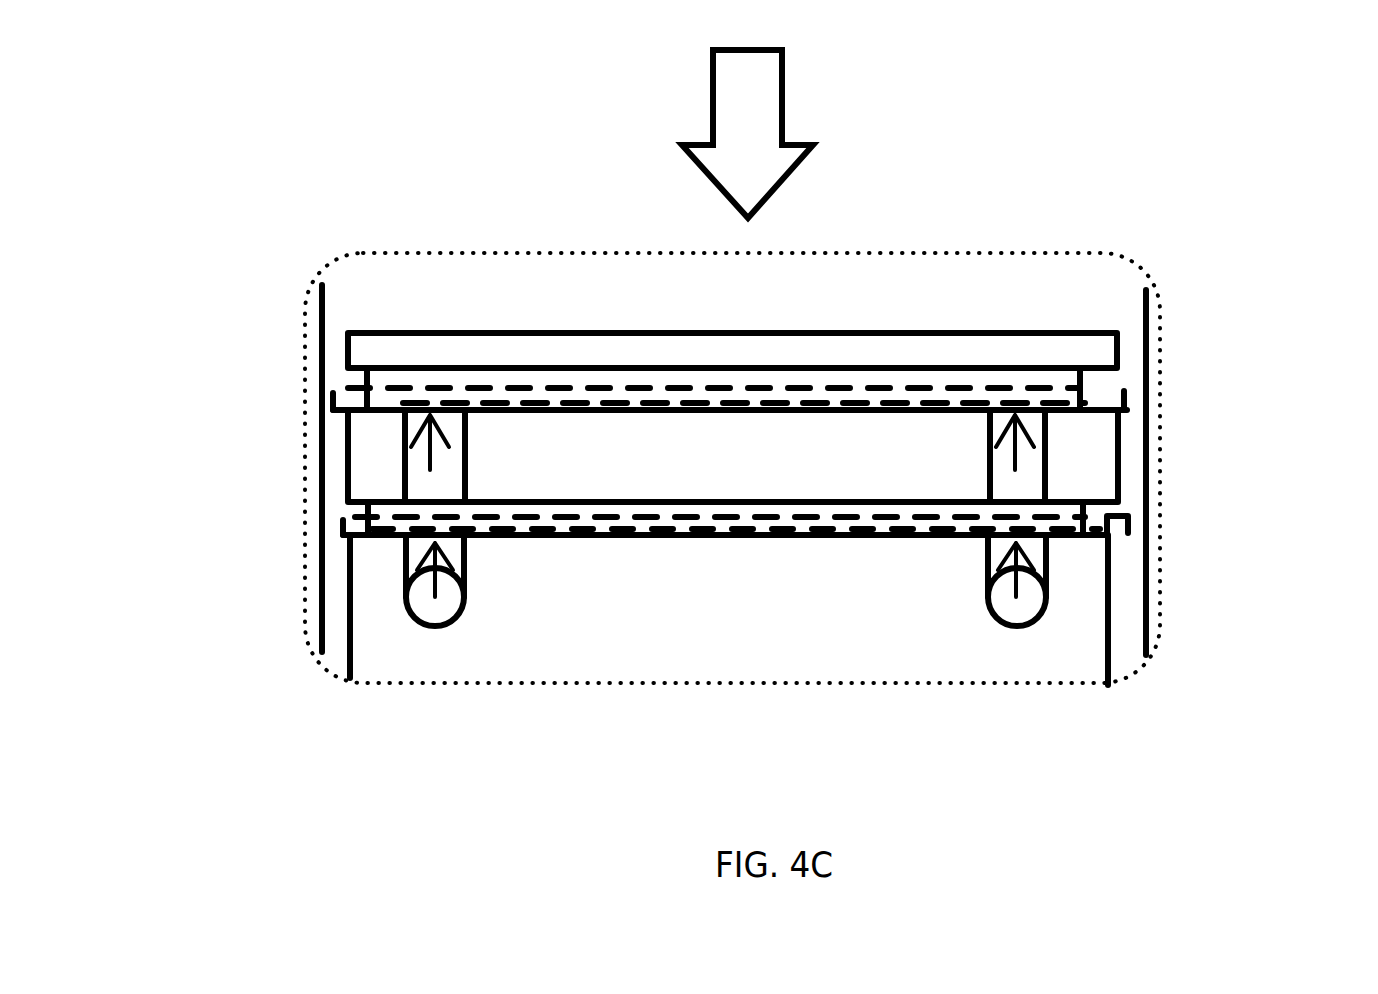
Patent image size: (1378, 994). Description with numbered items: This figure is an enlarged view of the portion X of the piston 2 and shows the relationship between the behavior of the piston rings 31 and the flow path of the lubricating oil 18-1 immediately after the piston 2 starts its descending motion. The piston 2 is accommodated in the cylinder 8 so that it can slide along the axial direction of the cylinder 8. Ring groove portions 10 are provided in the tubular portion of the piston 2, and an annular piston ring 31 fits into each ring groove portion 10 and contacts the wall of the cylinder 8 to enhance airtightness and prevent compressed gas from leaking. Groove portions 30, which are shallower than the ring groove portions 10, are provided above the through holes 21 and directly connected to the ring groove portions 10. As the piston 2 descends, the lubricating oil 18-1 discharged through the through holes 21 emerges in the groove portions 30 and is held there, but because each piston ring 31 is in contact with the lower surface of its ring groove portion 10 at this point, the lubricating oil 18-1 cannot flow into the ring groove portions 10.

The piston 2 is at (505, 330).
The portion X is at (1027, 252).
The cylinder 8 is at (1150, 328).
The ring groove portions 10 is at (347, 371).
The piston rings 31 is at (1092, 393).
The groove portions 30 is at (1032, 478).
The lubricating oil 18-1 is at (1025, 553).
The through holes 21 is at (1028, 607).